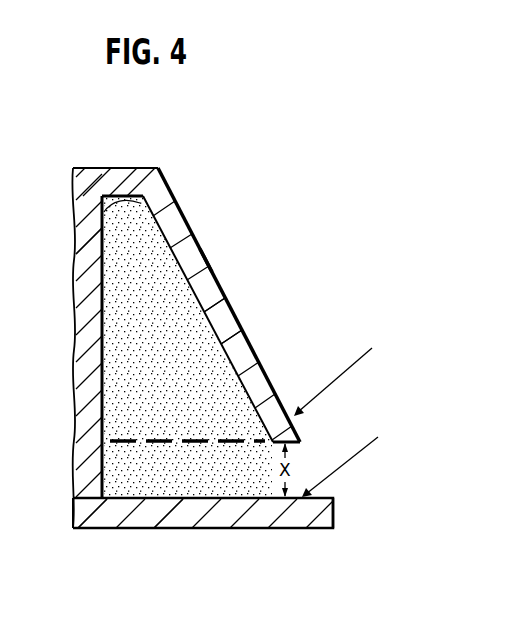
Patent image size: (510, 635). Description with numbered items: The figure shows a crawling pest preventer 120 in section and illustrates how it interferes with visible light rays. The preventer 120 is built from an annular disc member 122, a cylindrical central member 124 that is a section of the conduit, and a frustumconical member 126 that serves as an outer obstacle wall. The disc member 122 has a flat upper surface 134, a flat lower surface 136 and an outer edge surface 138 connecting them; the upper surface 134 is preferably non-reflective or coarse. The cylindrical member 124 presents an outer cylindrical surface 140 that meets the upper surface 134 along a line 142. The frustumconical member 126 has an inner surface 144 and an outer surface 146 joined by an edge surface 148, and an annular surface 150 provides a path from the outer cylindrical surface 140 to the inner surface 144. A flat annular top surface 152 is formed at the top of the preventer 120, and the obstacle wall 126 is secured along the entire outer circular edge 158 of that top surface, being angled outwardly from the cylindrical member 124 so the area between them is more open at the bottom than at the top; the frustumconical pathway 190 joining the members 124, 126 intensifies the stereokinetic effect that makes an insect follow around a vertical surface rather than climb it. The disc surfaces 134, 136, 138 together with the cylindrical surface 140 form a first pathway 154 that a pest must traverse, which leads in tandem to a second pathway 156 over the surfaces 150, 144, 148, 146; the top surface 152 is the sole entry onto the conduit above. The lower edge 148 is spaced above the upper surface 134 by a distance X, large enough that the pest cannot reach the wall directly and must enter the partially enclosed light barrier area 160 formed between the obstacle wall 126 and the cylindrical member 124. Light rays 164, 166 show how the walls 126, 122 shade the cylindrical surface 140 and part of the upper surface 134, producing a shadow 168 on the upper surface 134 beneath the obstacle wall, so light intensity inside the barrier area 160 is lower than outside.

The crawling pest preventer 120 is at (193, 193).
The annular disc member 122 is at (282, 522).
The cylindrical central member 124 is at (86, 282).
The frustumconical member 126 is at (186, 226).
The upper surface 134 is at (180, 495).
The lower surface 136 is at (103, 529).
The outer edge surface 138 is at (333, 518).
The outer cylindrical surface 140 is at (100, 385).
The line 142 is at (80, 473).
The inner surface 144 is at (222, 286).
The outer surface 146 is at (206, 260).
The edge surface 148 is at (298, 448).
The annular surface 150 is at (100, 226).
The top surface 152 is at (100, 168).
The first pathway 154 is at (84, 254).
The second pathway 156 is at (240, 319).
The outer circular edge 158 is at (158, 168).
The light barrier area 160 is at (190, 458).
The light ray 164 is at (372, 346).
The light ray 166 is at (378, 437).
The shadow 168 is at (226, 486).
The frustumconical pathway 190 is at (102, 206).